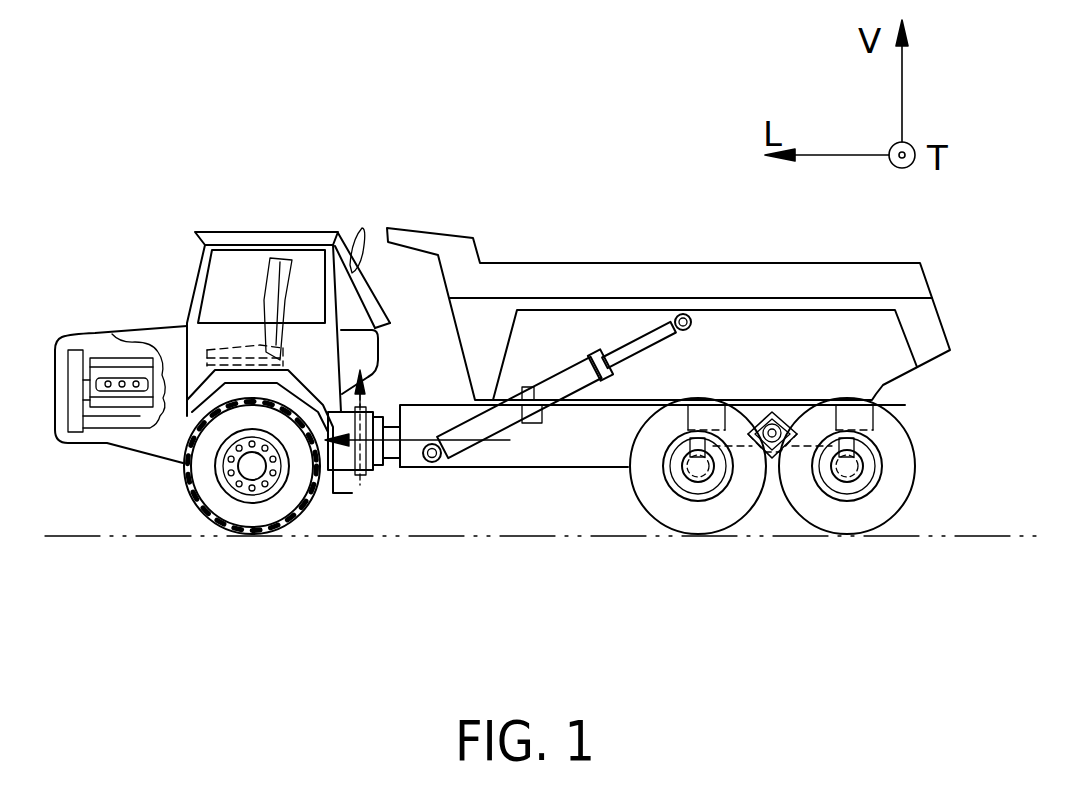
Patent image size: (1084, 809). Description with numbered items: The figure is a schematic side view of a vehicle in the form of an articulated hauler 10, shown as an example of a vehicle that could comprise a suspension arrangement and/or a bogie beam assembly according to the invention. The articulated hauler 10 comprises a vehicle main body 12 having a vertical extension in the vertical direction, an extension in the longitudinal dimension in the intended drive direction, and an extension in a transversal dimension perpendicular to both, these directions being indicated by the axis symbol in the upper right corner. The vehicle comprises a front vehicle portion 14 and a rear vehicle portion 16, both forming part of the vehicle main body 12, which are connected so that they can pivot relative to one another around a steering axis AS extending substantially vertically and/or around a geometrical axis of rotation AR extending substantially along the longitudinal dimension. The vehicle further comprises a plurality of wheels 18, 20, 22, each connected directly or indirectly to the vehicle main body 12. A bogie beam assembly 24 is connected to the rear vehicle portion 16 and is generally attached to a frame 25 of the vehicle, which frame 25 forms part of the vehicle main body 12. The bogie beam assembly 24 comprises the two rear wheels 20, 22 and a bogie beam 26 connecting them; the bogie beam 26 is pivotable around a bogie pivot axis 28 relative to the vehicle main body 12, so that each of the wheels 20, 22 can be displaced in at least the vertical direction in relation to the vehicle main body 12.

The articulated hauler 10 is at (497, 388).
The vehicle main body 12 is at (222, 286).
The front vehicle portion 14 is at (92, 497).
The rear vehicle portion 16 is at (482, 502).
The wheel 18 is at (187, 495).
The wheel 20 is at (667, 513).
The wheel 22 is at (877, 513).
The bogie beam assembly 24 is at (947, 625).
The frame 25 is at (570, 446).
The bogie beam 26 is at (777, 458).
The bogie pivot axis 28 is at (755, 412).
The steering axis AS is at (363, 490).
The geometrical axis of rotation AR is at (408, 446).